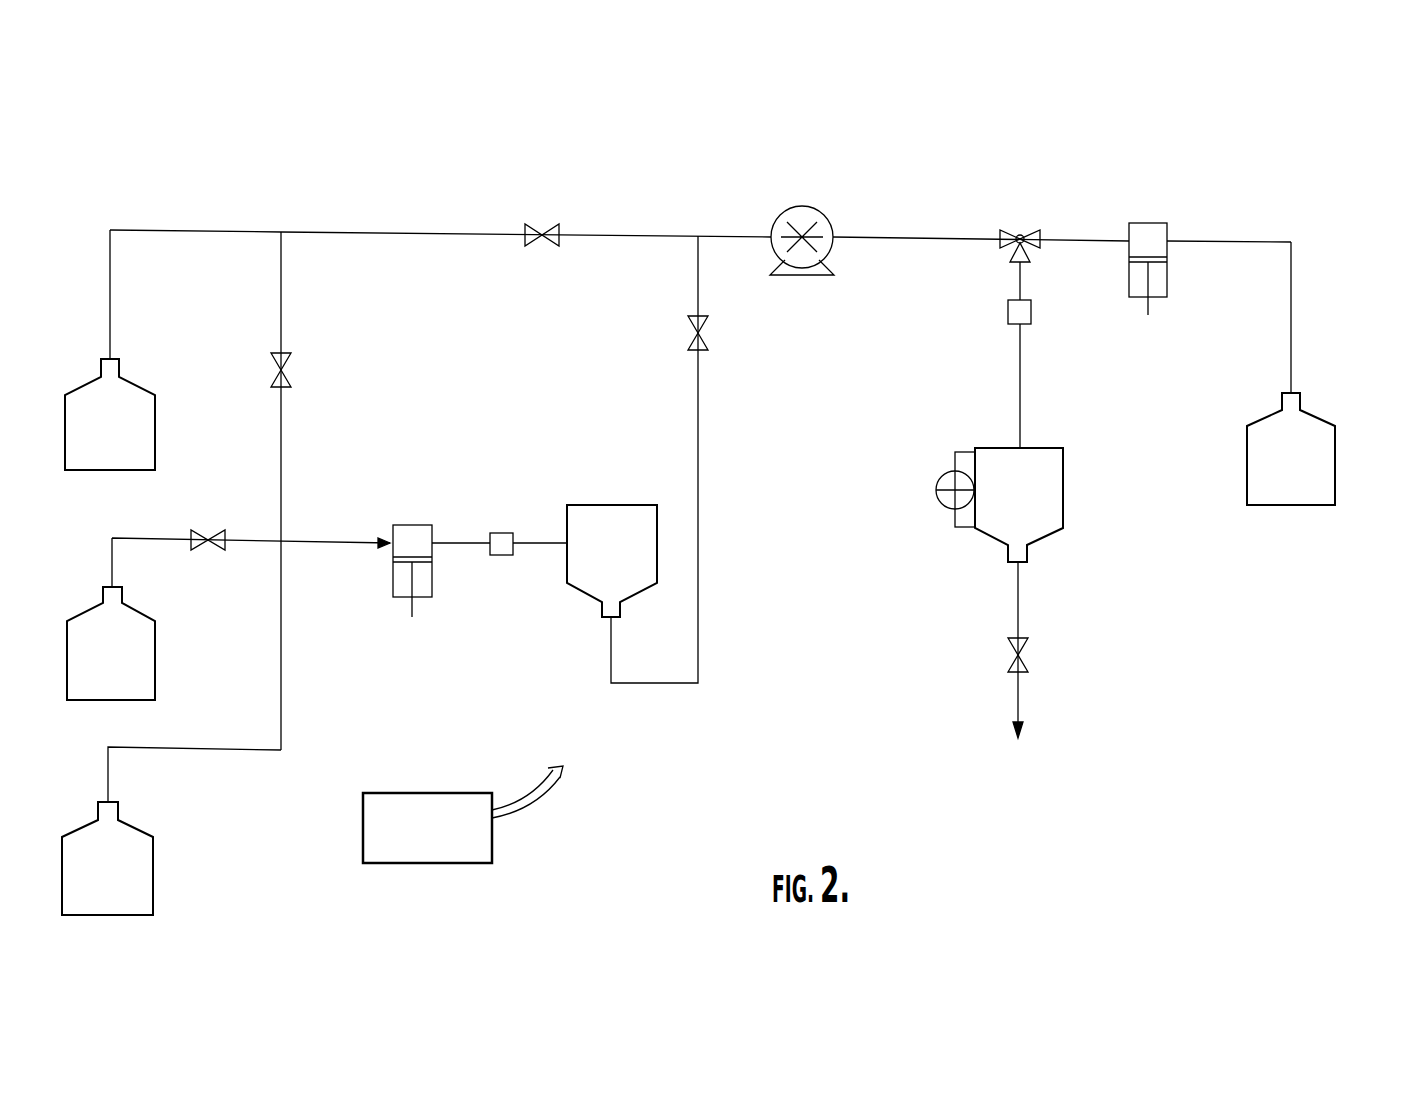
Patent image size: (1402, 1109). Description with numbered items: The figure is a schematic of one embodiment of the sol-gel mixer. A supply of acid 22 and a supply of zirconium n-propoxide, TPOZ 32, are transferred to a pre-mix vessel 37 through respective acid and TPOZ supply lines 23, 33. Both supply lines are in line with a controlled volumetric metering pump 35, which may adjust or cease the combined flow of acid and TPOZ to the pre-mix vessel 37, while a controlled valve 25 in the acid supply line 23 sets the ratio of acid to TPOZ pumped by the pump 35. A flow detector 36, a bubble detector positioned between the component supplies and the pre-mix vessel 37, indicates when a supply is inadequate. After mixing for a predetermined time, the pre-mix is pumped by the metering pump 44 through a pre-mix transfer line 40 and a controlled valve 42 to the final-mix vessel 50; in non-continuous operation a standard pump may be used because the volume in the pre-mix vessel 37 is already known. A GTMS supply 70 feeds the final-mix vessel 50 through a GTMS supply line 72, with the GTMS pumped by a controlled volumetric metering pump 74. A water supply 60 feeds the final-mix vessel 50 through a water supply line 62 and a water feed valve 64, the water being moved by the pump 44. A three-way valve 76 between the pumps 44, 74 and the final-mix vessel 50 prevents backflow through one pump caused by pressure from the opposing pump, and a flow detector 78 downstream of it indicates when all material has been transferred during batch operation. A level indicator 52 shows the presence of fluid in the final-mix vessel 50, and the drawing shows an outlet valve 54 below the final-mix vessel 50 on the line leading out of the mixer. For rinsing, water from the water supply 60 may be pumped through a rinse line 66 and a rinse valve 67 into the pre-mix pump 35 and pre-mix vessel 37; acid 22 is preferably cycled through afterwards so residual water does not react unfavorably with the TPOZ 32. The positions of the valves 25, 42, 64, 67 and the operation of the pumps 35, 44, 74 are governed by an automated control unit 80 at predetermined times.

The supply of acid 22 is at (155, 660).
The acid supply line 23 is at (71, 550).
The controlled valve 25 is at (206, 539).
The zirconium n-propoxide (TPOZ) supply 32 is at (153, 888).
The TPOZ supply line 33 is at (203, 736).
The controlled volumetric metering pump 35 is at (432, 578).
The flow detector 36 is at (495, 555).
The pre-mix vessel 37 is at (628, 505).
The pre-mix transfer line 40 is at (698, 646).
The controlled valve 42 is at (699, 333).
The metering pump 44 is at (821, 212).
The final-mix vessel 50 is at (1063, 498).
The level indicator 52 is at (940, 476).
The outlet valve 54 is at (1019, 655).
The water supply 60 is at (80, 392).
The water supply line 62 is at (410, 222).
The water feed valve 64 is at (543, 234).
The rinse line 66 is at (293, 299).
The rinse valve 67 is at (283, 370).
The GTMS supply 70 is at (1320, 420).
The GTMS supply line 72 is at (1288, 298).
The controlled volumetric metering pump 74 is at (1157, 223).
The three-way valve 76 is at (1019, 232).
The flow detector 78 is at (1031, 305).
The automated control unit 80 is at (420, 793).